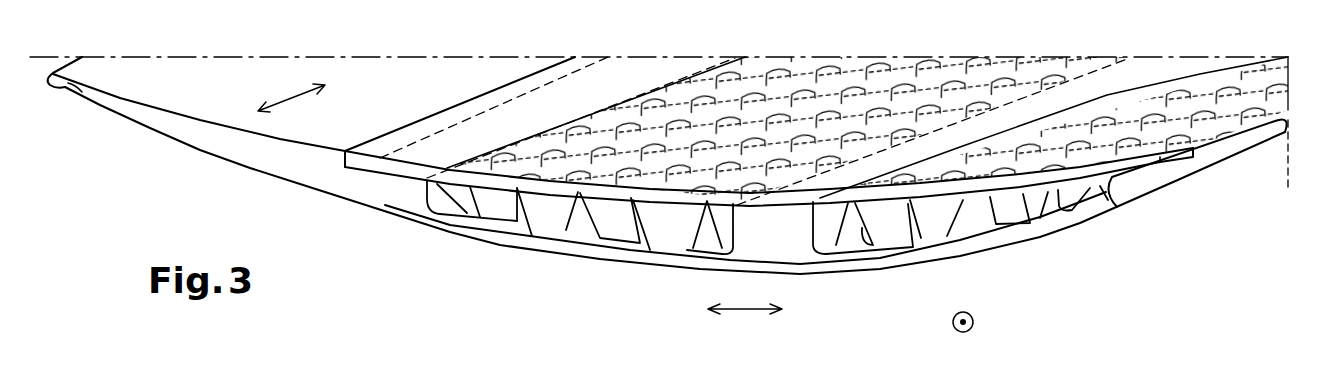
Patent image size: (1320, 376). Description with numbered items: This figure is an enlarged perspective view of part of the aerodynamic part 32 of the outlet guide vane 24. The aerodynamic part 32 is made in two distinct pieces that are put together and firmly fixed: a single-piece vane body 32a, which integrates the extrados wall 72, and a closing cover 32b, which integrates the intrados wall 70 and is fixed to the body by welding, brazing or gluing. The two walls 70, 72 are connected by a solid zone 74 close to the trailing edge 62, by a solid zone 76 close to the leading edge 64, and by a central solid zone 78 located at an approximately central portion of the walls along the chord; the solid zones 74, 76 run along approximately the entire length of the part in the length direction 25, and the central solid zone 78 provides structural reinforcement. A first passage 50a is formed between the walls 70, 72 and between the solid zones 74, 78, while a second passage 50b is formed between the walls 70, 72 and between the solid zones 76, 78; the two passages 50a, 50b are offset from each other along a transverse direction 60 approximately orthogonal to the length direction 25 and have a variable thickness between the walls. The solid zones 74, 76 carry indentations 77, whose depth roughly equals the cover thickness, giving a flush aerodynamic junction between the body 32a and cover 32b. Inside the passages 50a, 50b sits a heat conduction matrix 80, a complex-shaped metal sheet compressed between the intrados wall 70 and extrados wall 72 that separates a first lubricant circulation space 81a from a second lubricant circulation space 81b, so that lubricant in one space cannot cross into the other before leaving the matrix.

The outlet guide vane 24 is at (660, 45).
The length direction 25 is at (287, 102).
The aerodynamic part 32 is at (886, 40).
The vane body 32a is at (345, 205).
The cover 32b is at (428, 132).
The first passage 50a is at (458, 224).
The second passage 50b is at (913, 258).
The transverse direction 60 is at (746, 313).
The trailing edge 62 is at (82, 92).
The leading edge 64 is at (1234, 140).
The intrados wall 70 is at (447, 170).
The extrados wall 72 is at (606, 258).
The solid zone 74 is at (242, 148).
The solid zone 76 is at (1140, 180).
The indentations 77 is at (388, 168).
The central solid zone 78 is at (780, 230).
The heat conduction matrix 80 is at (518, 232).
The first lubricant circulation space 81a is at (549, 215).
The second lubricant circulation space 81b is at (703, 256).